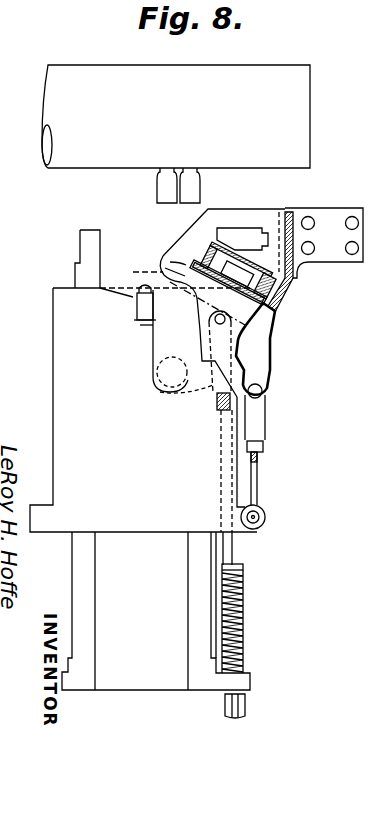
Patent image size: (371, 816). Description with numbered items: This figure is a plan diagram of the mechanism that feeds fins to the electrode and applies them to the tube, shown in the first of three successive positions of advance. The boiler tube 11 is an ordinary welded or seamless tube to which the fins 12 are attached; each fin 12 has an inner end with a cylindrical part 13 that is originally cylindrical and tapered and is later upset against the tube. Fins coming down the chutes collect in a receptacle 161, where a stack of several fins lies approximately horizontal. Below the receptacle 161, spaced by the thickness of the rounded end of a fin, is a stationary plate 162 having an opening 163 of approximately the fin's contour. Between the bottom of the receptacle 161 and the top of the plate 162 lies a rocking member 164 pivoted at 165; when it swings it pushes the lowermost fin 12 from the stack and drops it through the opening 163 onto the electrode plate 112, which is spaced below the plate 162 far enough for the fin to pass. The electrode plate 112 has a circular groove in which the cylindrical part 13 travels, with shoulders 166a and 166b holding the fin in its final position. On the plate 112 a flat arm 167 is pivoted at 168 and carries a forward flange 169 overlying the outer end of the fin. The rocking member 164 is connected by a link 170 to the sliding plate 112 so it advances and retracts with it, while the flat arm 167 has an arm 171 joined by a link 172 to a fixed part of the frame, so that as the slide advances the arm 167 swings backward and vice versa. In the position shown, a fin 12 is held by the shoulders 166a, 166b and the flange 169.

The boiler tube 11 is at (176, 116).
The fin 12 is at (296, 268).
The cylindrical part 13 is at (288, 287).
The electrode plate 112 is at (73, 295).
The receptacle 161 is at (236, 268).
The stationary plate 162 is at (205, 225).
The opening 163 is at (236, 227).
The rocking member 164 is at (271, 327).
The pivot 165 is at (172, 263).
The shoulder 166a is at (80, 274).
The shoulder 166b is at (140, 326).
The flat arm 167 is at (155, 338).
The pivot 168 is at (164, 377).
The forward flange 169 is at (172, 269).
The link 170 is at (262, 456).
The arm 171 is at (182, 396).
The link 172 is at (235, 568).